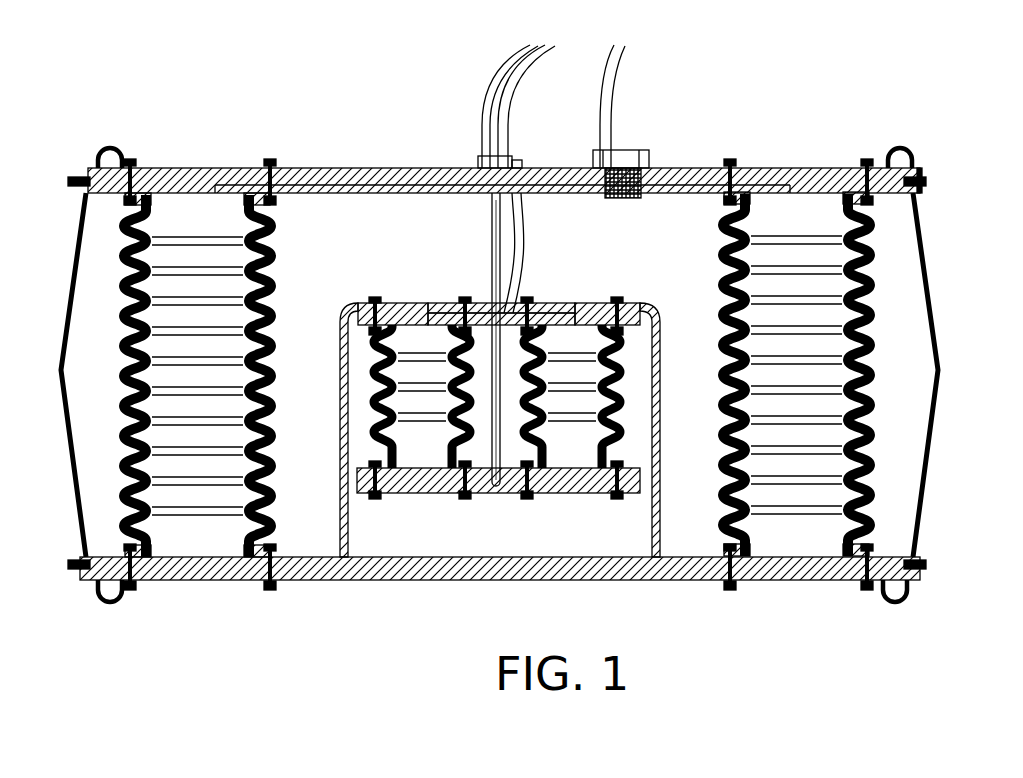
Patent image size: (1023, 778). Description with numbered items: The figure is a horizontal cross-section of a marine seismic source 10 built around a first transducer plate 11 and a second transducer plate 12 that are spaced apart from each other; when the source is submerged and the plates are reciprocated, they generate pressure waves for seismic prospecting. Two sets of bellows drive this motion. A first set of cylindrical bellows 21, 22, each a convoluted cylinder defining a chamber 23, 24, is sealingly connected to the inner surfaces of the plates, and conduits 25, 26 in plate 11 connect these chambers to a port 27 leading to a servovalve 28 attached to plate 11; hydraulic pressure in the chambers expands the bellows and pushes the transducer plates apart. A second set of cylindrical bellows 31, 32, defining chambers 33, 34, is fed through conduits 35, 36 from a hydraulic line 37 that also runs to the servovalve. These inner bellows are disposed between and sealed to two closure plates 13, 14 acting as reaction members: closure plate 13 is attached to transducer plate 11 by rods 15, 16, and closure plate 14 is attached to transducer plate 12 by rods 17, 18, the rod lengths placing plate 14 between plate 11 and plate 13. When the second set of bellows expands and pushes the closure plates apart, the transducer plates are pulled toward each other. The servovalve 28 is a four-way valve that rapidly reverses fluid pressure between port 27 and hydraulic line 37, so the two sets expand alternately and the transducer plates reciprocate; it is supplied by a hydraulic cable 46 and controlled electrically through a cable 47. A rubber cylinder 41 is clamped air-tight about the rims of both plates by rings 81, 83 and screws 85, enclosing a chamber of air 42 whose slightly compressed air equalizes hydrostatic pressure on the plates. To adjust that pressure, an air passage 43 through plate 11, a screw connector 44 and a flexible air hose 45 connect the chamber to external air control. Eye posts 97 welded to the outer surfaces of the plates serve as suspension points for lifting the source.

The marine seismic source 10 is at (142, 126).
The first transducer plate 11 is at (805, 172).
The second transducer plate 12 is at (815, 580).
The closure plate 13 is at (582, 494).
The closure plate 14 is at (624, 303).
The rod 15 is at (490, 236).
The rod 16 is at (458, 340).
The rod 17 is at (350, 522).
The rod 18 is at (658, 508).
The cylindrical bellows 21 is at (124, 316).
The cylindrical bellows 22 is at (870, 372).
The chamber 23 is at (197, 376).
The chamber 24 is at (796, 375).
The conduit 25 is at (266, 180).
The conduit 26 is at (736, 172).
The port 27 is at (482, 165).
The servovalve 28 is at (508, 160).
The cylindrical bellows 31 is at (362, 386).
The cylindrical bellows 32 is at (628, 410).
The chamber 33 is at (422, 394).
The chamber 34 is at (572, 394).
The conduit 35 is at (430, 303).
The conduit 36 is at (570, 303).
The hydraulic line 37 is at (522, 246).
The rubber cylinder 41 is at (927, 245).
The chamber of air 42 is at (84, 375).
The air passage 43 is at (626, 200).
The screw connector 44 is at (634, 158).
The flexible air hose 45 is at (612, 82).
The hydraulic cable 46 is at (536, 80).
The cable 47 is at (497, 88).
The ring 81 is at (925, 172).
The ring 83 is at (928, 562).
The screw 85 is at (70, 183).
The eye post 97 is at (905, 152).